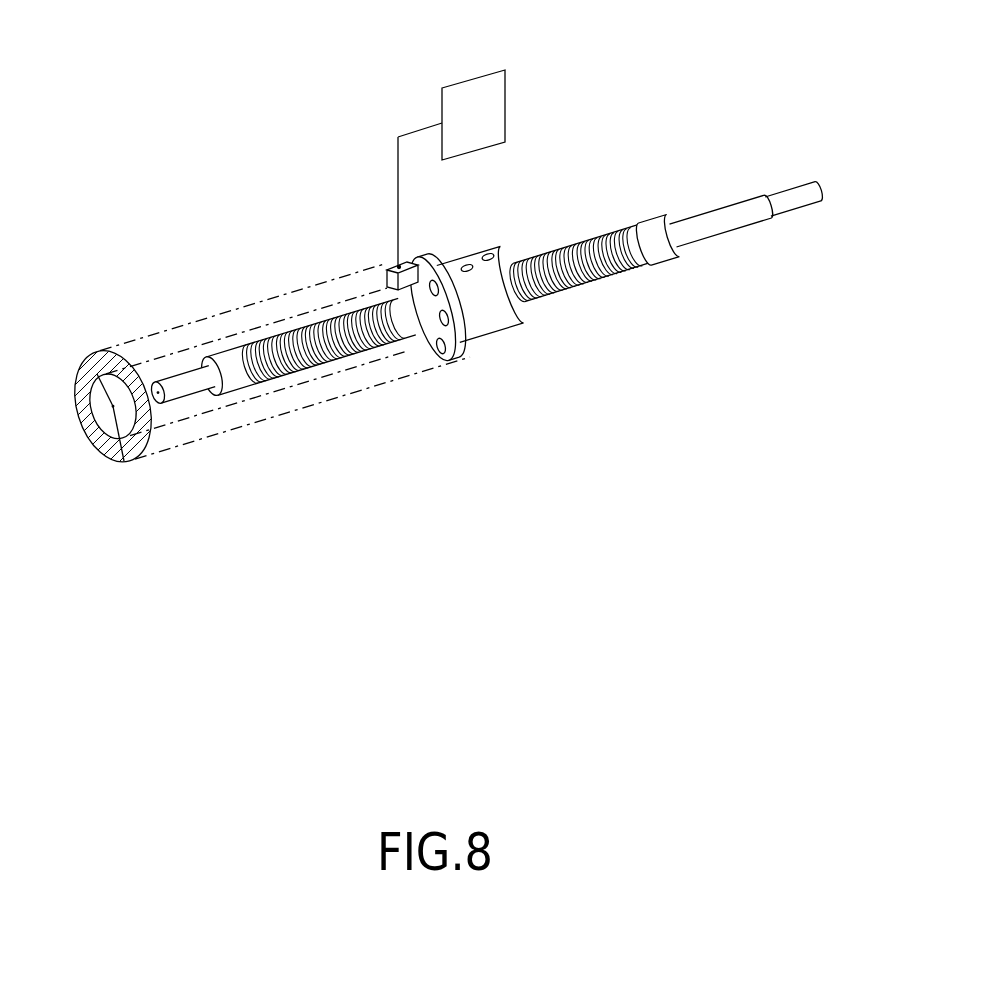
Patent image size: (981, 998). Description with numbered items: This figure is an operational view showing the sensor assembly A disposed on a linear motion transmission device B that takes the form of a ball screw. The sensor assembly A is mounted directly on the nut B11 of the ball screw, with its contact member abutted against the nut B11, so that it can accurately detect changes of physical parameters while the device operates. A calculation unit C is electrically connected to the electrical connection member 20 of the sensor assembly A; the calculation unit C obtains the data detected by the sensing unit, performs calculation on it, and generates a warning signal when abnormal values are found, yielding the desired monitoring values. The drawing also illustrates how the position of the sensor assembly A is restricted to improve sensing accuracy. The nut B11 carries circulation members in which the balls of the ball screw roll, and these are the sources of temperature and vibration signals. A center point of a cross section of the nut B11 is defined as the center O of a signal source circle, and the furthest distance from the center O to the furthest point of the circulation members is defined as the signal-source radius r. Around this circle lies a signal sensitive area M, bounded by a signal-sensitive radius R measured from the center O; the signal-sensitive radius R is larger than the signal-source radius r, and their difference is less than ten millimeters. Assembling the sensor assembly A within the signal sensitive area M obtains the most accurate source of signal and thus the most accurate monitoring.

The signal sensitive area M is at (83, 370).
The signal-source radius r is at (106, 390).
The center O is at (121, 411).
The signal-sensitive radius R is at (122, 436).
The sensor assembly A is at (387, 268).
The electrical connection member 20 is at (400, 266).
The nut B11 is at (435, 268).
The linear motion transmission device B is at (515, 252).
The calculation unit C is at (474, 75).